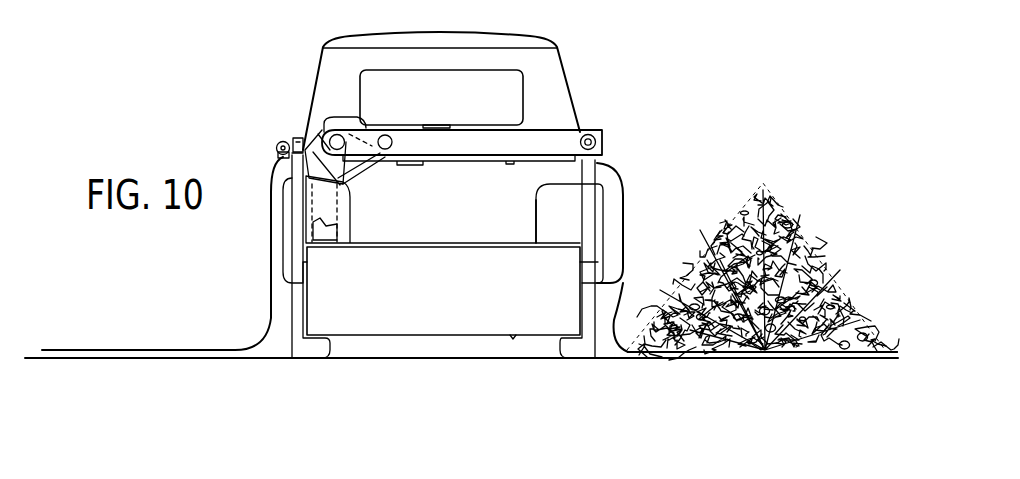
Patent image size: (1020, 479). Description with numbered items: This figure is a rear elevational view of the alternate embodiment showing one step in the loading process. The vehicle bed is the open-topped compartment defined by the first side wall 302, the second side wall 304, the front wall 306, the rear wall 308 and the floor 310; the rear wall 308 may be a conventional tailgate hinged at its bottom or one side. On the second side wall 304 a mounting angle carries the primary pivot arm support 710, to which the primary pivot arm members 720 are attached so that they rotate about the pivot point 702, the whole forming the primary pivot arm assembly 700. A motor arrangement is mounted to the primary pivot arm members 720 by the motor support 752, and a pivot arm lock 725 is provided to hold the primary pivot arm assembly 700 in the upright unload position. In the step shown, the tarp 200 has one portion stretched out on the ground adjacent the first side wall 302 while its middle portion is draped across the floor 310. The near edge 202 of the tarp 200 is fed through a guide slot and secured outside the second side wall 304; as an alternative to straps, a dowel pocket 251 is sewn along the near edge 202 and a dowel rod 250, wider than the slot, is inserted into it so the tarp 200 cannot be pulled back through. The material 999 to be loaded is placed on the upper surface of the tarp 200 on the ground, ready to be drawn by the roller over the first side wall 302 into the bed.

The tarp 200 is at (794, 353).
The near edge 202 is at (43, 348).
The dowel rod 250 is at (239, 133).
The dowel pocket 251 is at (277, 143).
The first side wall 302 is at (623, 226).
The second side wall 304 is at (288, 226).
The front wall 306 is at (465, 213).
The rear wall 308 is at (465, 298).
The floor 310 is at (564, 232).
The primary pivot arm assembly 700 is at (415, 135).
The pivot point 702 is at (327, 140).
The primary pivot arm support 710 is at (356, 215).
The primary pivot arm member 720 is at (462, 143).
The pivot arm lock 725 is at (335, 114).
The motor support 752 is at (418, 162).
The material 999 is at (767, 192).